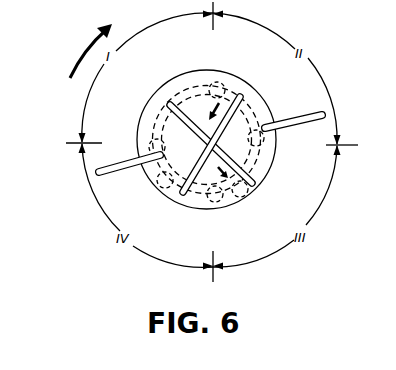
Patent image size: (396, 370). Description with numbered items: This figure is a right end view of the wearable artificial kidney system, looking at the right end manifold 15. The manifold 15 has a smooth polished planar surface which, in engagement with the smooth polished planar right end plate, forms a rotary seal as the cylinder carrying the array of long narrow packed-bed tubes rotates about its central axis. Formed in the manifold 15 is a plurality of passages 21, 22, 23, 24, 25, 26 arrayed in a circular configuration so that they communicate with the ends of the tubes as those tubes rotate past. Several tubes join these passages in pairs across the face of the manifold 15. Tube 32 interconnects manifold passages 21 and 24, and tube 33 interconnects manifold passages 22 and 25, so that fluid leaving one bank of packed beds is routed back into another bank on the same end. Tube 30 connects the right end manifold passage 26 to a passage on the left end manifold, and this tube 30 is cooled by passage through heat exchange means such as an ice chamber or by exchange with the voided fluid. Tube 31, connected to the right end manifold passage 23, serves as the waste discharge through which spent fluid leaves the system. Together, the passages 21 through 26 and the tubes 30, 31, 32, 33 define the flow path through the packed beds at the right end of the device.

The right end manifold 15 is at (140, 117).
The manifold passage 21 is at (148, 97).
The manifold passage 22 is at (233, 84).
The manifold passage 23 is at (283, 136).
The manifold passage 24 is at (241, 204).
The manifold passage 25 is at (187, 197).
The manifold passage 26 is at (154, 174).
The tube 30 is at (118, 178).
The tube 31 is at (305, 110).
The tube 32 is at (197, 131).
The tube 33 is at (226, 125).